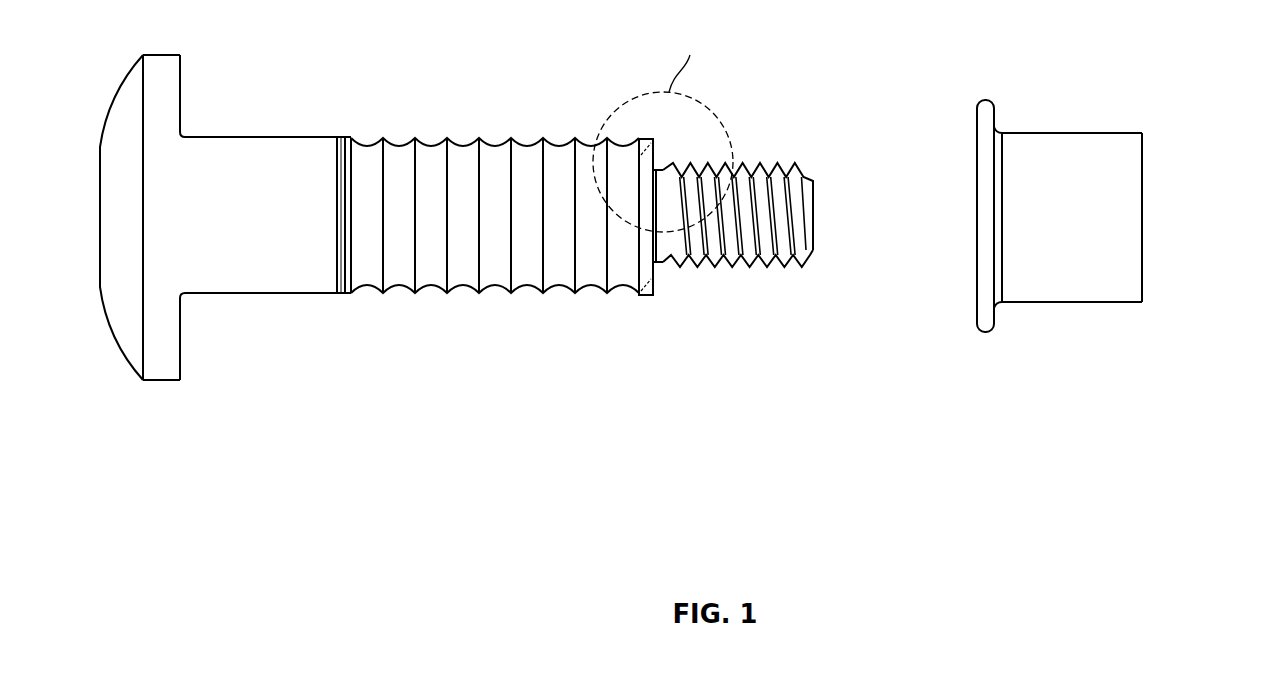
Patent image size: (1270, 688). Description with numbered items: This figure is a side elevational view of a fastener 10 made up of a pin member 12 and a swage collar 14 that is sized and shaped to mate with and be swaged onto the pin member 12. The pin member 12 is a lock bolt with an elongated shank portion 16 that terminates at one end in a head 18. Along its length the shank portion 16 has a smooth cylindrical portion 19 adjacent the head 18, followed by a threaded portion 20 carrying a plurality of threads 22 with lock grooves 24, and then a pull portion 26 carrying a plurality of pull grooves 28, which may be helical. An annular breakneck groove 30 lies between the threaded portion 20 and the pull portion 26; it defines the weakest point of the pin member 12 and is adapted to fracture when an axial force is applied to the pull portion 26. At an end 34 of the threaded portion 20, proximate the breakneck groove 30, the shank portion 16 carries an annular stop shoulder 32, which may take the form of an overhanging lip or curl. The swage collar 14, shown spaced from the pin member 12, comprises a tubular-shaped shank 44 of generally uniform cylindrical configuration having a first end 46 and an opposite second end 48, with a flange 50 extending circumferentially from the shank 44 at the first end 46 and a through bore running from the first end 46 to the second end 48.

The fastener 10 is at (236, 478).
The pin member 12 is at (388, 113).
The swage collar 14 is at (1146, 111).
The shank portion 16 is at (337, 294).
The head 18 is at (120, 121).
The smooth cylindrical portion 19 is at (262, 270).
The threaded portion 20 is at (527, 146).
The threads 22 is at (477, 291).
The lock grooves 24 is at (558, 276).
The pull portion 26 is at (727, 265).
The pull grooves 28 is at (758, 168).
The breakneck groove 30 is at (660, 222).
The stop shoulder 32 is at (635, 148).
The end of the threaded portion 34 is at (638, 294).
The tubular-shaped shank 44 is at (1058, 280).
The first end 46 is at (977, 290).
The second end 48 is at (1143, 280).
The flange 50 is at (987, 102).